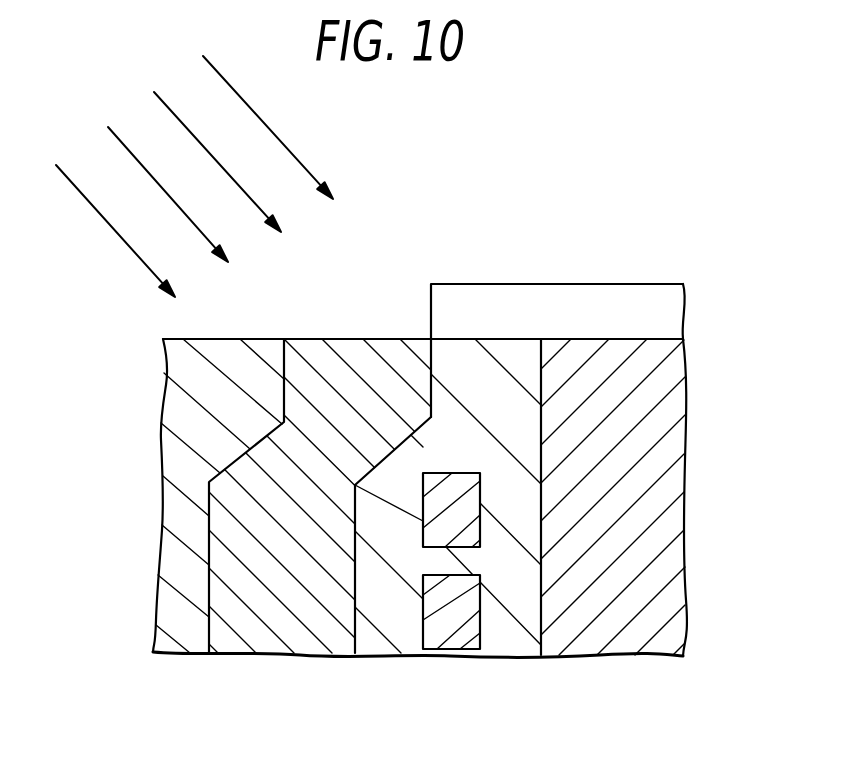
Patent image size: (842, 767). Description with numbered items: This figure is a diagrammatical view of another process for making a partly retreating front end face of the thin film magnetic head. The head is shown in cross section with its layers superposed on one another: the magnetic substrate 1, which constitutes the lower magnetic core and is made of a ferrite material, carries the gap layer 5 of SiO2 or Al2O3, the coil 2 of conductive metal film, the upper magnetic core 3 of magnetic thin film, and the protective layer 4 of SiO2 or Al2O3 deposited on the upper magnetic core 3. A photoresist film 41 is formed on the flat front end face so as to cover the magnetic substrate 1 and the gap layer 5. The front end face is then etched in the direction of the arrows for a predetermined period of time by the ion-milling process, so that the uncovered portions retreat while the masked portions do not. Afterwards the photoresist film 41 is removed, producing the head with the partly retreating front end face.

The magnetic substrate 1 is at (653, 381).
The coil 2 is at (452, 630).
The upper magnetic core 3 is at (287, 603).
The protective layer 4 is at (175, 390).
The gap layer 5 is at (458, 360).
The photoresist film 41 is at (551, 312).